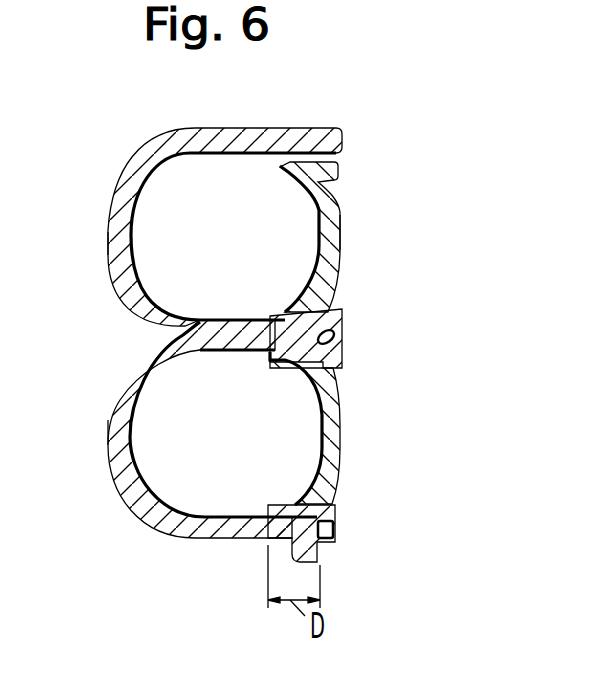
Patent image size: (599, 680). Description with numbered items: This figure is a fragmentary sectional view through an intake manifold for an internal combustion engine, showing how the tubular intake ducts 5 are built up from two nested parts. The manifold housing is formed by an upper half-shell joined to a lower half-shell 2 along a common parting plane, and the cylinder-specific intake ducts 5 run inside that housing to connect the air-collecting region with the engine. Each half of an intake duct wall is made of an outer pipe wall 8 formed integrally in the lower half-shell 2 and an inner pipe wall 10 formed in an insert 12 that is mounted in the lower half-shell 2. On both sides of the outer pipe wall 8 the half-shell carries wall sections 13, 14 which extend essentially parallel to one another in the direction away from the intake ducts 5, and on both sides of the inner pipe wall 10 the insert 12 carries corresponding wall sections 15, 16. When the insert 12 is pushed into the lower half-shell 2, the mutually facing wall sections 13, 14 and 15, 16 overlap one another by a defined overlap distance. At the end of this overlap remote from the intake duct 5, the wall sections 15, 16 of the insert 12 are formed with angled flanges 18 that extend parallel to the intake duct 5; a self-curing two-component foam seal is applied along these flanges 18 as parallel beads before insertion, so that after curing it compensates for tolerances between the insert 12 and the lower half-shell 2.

The lower half-shell 2 is at (137, 376).
The intake duct 5 is at (172, 197).
The outer pipe wall 8 is at (130, 238).
The inner pipe wall 10 is at (318, 216).
The insert 12 is at (322, 232).
The wall section 13 is at (340, 326).
The wall section 14 is at (287, 142).
The wall section 15 is at (333, 307).
The wall section 16 is at (343, 163).
The angled flange 18 is at (334, 344).